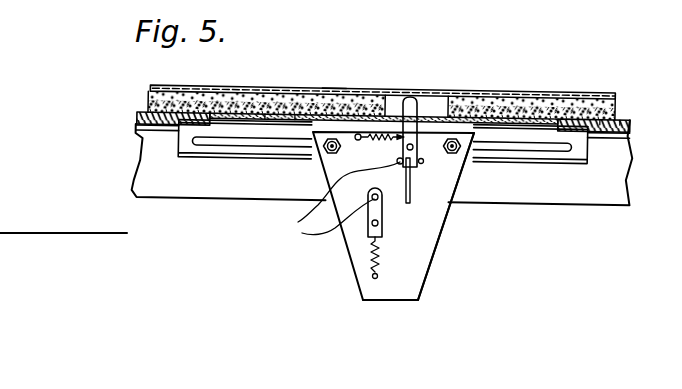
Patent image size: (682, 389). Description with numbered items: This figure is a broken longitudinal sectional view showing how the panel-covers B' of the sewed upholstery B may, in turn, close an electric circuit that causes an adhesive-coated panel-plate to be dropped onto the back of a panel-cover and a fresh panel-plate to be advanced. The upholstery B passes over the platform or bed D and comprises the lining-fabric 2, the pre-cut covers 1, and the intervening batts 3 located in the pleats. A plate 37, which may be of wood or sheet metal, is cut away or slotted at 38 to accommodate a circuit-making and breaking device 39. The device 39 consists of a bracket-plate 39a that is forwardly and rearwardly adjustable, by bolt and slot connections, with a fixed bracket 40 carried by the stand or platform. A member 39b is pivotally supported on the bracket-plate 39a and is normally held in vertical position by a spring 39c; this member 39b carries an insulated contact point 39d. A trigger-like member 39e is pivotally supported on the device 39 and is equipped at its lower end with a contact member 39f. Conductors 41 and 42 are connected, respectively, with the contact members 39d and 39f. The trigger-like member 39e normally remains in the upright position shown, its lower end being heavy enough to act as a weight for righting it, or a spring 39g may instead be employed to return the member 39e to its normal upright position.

The pre-cut covers 1 is at (170, 111).
The lining-fabric 2 is at (397, 89).
The batts 3 is at (203, 100).
The sewed upholstery B is at (339, 73).
The panel-covers B' is at (455, 86).
The platform or bed D is at (135, 114).
The plate 37 is at (136, 135).
The slot 38 is at (273, 121).
The circuit-making and breaking device 39 is at (394, 284).
The bracket-plate 39a is at (418, 283).
The pivoted member 39b is at (383, 209).
The spring 39c is at (367, 253).
The insulated contact point 39d is at (436, 224).
The trigger-like member 39e is at (413, 112).
The contact member 39f is at (411, 185).
The spring 39g is at (387, 143).
The fixed bracket 40 is at (188, 153).
The conductor 41 is at (350, 238).
The conductor 42 is at (298, 222).